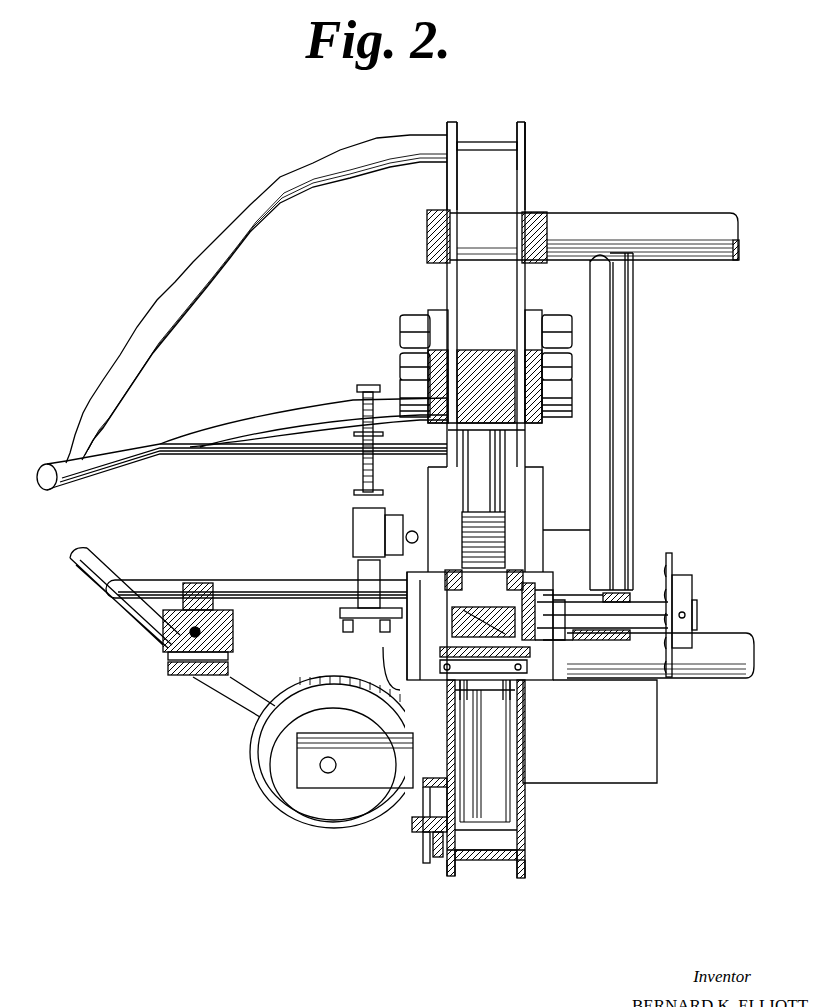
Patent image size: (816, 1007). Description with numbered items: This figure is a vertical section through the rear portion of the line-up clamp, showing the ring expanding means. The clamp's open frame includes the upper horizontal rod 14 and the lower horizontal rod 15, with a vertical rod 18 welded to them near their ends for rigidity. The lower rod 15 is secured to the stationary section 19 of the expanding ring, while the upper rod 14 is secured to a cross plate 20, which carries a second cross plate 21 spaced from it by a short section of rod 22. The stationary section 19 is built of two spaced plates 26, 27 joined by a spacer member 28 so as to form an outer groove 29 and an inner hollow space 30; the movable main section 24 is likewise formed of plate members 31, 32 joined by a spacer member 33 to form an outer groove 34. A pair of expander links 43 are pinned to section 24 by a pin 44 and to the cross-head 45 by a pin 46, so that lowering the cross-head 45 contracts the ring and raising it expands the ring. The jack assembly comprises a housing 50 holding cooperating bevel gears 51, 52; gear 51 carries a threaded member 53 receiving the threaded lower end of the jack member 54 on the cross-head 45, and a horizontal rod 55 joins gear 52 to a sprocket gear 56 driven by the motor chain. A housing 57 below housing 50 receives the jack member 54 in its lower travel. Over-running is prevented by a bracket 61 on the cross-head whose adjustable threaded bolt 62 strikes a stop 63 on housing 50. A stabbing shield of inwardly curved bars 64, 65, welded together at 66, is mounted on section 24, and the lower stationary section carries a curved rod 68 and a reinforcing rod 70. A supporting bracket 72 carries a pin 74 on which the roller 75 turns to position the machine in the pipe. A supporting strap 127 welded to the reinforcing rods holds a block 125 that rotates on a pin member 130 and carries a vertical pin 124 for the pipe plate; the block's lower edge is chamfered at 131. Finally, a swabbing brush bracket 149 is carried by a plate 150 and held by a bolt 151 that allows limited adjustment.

The horizontal rod 14 is at (654, 222).
The horizontal rod 15 is at (690, 672).
The vertical rod 18 is at (624, 354).
The stationary section 19 is at (532, 858).
The cross plate 20 is at (534, 212).
The second cross plate 21 is at (427, 238).
The short section of rod 22 is at (480, 262).
The main section 24 is at (445, 181).
The plate 26 is at (448, 880).
The plate 27 is at (526, 878).
The spacer member 28 is at (484, 861).
The outer groove 29 is at (515, 870).
The inner hollow space 30 is at (500, 832).
The plate member 31 is at (447, 128).
The plate member 32 is at (528, 126).
The spacer member 33 is at (497, 142).
The outer groove 34 is at (470, 140).
The expander links 43 is at (438, 312).
The pin 44 is at (402, 328).
The cross-head 45 is at (498, 414).
The pin 46 is at (403, 368).
The housing 50 is at (419, 575).
The bevel gear 51 is at (496, 690).
The bevel gear 52 is at (535, 592).
The threaded member 53 is at (465, 615).
The jack member 54 is at (495, 500).
The horizontal rod 55 is at (633, 603).
The sprocket gear 56 is at (670, 555).
The housing 57 is at (510, 768).
The bracket 61 is at (357, 436).
The threaded bolt 62 is at (354, 493).
The stop 63 is at (360, 575).
The curved bar 64 is at (131, 450).
The curved bar 65 is at (192, 262).
The weld 66 is at (62, 460).
The curved rod 68 is at (88, 578).
The reinforcing rod 70 is at (150, 580).
The supporting bracket 72 is at (352, 782).
The pin 74 is at (325, 768).
The roller 75 is at (300, 806).
The vertical pin 124 is at (202, 588).
The block 125 is at (165, 636).
The supporting strap 127 is at (172, 677).
The pin member 130 is at (200, 632).
The chamfer 131 is at (228, 656).
The bracket 149 is at (412, 823).
The plate 150 is at (425, 862).
The bolt 151 is at (433, 840).